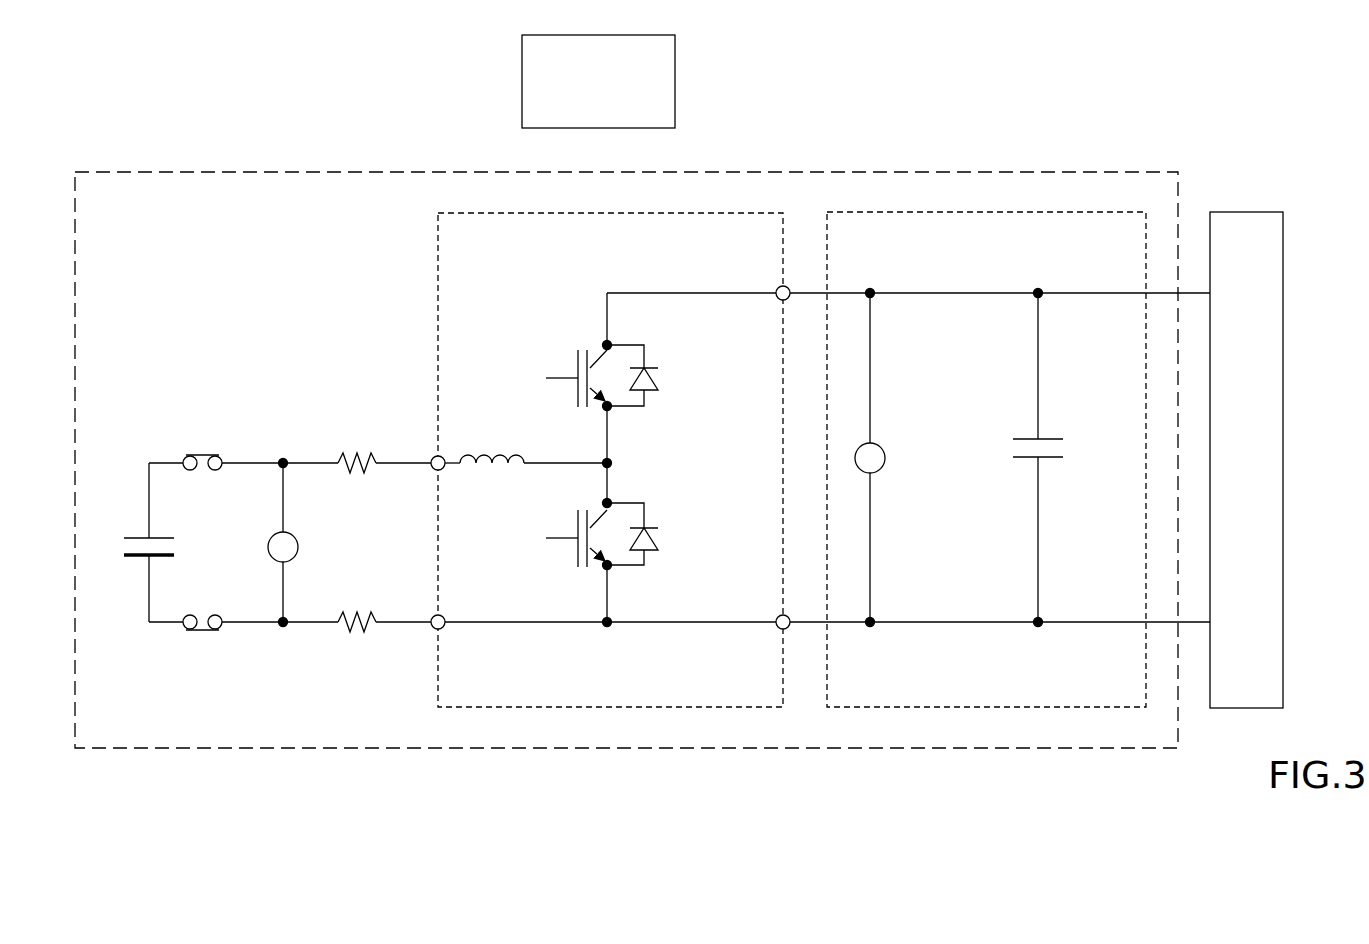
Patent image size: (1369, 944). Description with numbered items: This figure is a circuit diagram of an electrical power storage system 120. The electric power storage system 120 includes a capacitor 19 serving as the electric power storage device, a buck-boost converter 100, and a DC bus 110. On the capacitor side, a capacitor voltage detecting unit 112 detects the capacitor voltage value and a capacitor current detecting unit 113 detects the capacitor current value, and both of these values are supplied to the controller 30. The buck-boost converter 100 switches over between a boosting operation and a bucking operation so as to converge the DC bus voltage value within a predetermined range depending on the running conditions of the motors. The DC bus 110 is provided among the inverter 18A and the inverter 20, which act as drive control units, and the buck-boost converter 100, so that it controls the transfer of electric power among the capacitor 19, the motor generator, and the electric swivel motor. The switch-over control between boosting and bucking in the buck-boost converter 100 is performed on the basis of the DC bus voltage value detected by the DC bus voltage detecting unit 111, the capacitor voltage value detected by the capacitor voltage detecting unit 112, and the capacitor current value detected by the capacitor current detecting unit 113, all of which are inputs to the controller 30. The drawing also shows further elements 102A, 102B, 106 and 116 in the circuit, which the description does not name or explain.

The controller 30 is at (613, 35).
The capacitor 19 is at (176, 545).
The buck-boost converter 100 is at (683, 213).
The switch 102A is at (203, 451).
The switch 102B is at (203, 636).
The terminal 106 is at (777, 629).
The DC bus 110 is at (1117, 212).
The DC bus voltage detecting unit 111 is at (885, 458).
The capacitor voltage detecting unit 112 is at (298, 547).
The capacitor current detecting unit 113 is at (352, 452).
The current sensor 116 is at (354, 633).
The electrical power storage system 120 is at (1088, 172).
The inverter 18A is at (1246, 434).
The inverter 20 is at (1249, 212).